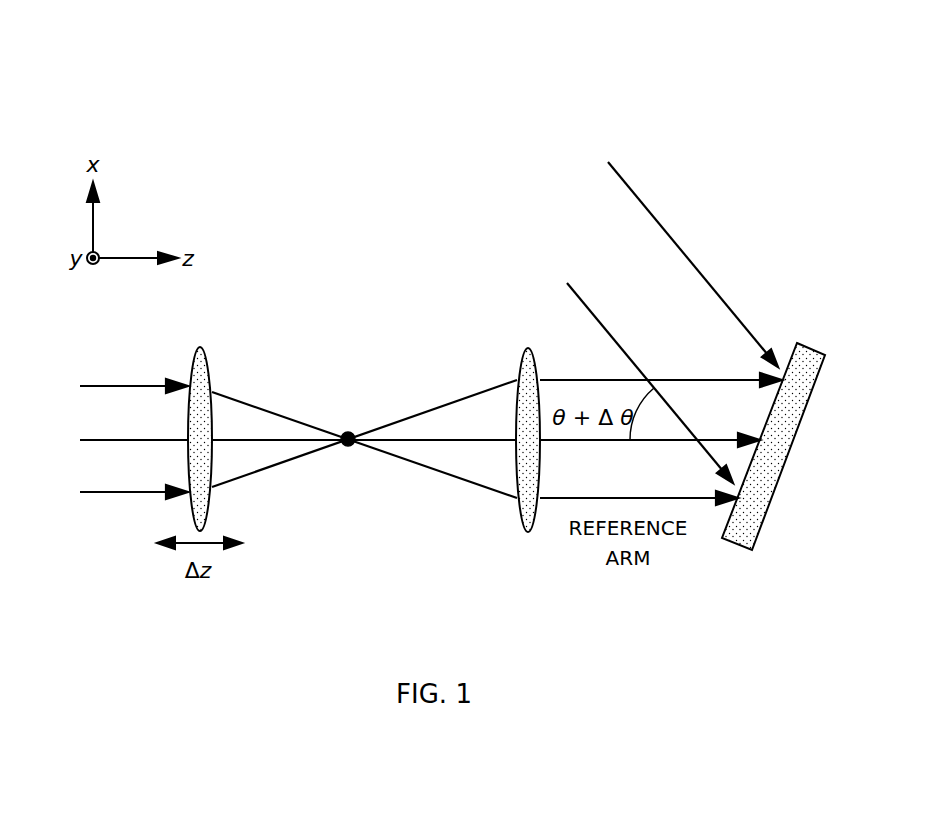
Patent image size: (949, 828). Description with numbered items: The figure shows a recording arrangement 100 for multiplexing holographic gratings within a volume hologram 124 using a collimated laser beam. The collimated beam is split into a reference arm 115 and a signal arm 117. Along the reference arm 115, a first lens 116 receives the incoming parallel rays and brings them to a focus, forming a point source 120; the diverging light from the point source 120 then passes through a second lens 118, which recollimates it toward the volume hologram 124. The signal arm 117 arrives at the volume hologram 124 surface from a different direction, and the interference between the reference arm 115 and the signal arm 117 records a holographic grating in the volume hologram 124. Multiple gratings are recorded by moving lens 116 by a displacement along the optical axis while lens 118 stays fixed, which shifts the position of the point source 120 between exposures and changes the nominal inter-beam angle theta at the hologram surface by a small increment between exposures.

The recording arrangement 100 is at (527, 112).
The reference arm 115 is at (116, 492).
The lens 116 is at (190, 373).
The signal arm 117 is at (693, 262).
The lens 118 is at (517, 375).
The point source 120 is at (352, 446).
The volume hologram 124 is at (757, 542).